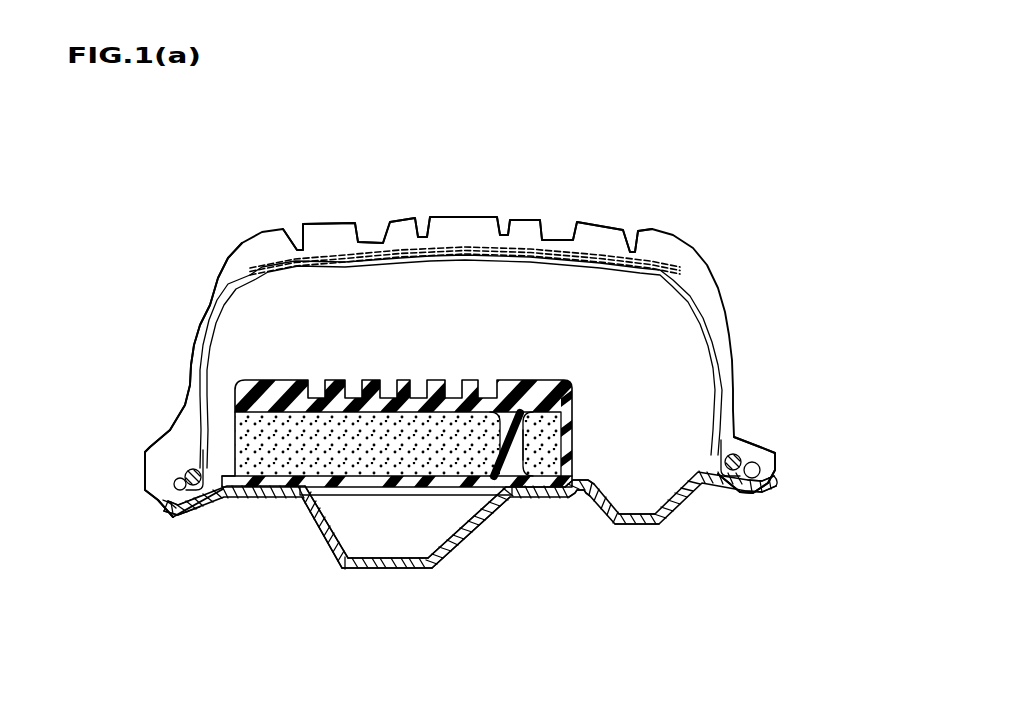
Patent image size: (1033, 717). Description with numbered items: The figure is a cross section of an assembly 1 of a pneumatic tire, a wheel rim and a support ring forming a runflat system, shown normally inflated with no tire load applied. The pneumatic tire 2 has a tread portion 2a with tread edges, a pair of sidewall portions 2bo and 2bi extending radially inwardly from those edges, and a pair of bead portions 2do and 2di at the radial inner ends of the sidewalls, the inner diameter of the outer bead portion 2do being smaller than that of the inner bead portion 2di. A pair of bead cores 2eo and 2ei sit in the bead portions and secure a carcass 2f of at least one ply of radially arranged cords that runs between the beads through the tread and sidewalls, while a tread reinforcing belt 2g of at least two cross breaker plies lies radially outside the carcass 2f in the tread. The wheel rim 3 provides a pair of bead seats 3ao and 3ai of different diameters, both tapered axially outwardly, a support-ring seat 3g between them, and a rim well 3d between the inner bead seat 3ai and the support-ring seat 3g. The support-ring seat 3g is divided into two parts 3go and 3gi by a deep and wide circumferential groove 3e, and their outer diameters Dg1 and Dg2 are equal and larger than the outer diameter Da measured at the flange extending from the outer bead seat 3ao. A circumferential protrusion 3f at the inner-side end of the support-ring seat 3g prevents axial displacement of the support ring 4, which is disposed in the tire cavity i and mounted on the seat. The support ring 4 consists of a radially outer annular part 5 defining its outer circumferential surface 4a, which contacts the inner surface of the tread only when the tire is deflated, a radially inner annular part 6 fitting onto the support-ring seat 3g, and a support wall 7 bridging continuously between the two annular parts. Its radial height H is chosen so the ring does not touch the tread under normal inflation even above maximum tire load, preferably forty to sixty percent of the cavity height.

The assembly 1 is at (788, 196).
The pneumatic tire 2 is at (606, 213).
The tread portion 2a is at (472, 207).
The tread reinforcing belt 2g is at (670, 261).
The carcass 2f is at (697, 321).
The inner sidewall portion 2bi is at (738, 346).
The outer sidewall portion 2bo is at (186, 338).
The outer bead portion 2do is at (140, 470).
The outer bead core 2eo is at (188, 470).
The inner bead portion 2di is at (782, 458).
The inner bead core 2ei is at (736, 458).
The wheel rim 3 is at (634, 525).
The outer bead seat 3ao is at (176, 520).
The inner bead seat 3ai is at (766, 488).
The circumferential groove 3e is at (384, 549).
The circumferential protrusion 3f is at (585, 470).
The rim well 3d is at (644, 504).
The support-ring seat 3g is at (480, 645).
The outer support-ring seat part 3go is at (268, 483).
The inner support-ring seat part 3gi is at (520, 490).
The support ring 4 is at (284, 376).
The outer circumferential surface 4a is at (497, 380).
The radially outer annular part 5 is at (552, 383).
The radially inner annular part 6 is at (450, 487).
The support wall 7 is at (518, 457).
The radial height of support ring H is at (368, 517).
The flange outer diameter Da is at (176, 497).
The outer diameter of outer support-ring seat part Dg1 is at (263, 487).
The outer diameter of inner support-ring seat part Dg2 is at (545, 488).
The tire cavity i is at (634, 344).